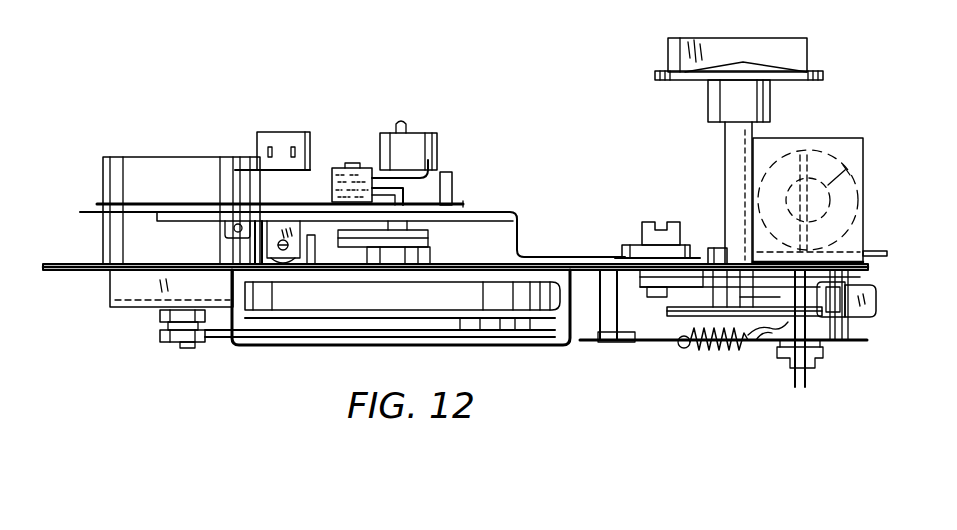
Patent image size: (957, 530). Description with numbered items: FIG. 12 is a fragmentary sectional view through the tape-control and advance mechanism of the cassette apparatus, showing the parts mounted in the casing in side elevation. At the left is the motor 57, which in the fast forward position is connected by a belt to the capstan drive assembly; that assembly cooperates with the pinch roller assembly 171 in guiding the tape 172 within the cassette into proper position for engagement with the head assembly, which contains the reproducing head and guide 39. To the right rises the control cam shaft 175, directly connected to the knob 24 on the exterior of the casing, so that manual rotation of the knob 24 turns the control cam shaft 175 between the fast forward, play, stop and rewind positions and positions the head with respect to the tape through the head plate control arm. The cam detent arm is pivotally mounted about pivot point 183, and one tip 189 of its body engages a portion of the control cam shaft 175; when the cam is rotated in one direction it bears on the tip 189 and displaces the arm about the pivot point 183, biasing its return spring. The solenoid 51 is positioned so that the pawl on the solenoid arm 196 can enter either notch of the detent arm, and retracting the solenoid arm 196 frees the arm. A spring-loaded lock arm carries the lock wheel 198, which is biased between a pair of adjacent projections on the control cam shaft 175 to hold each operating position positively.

The knob 24 is at (761, 55).
The guide 39 is at (279, 132).
The solenoid 51 is at (858, 154).
The motor 57 is at (125, 157).
The pinch roller assembly 171 is at (375, 166).
The tape 172 is at (222, 330).
The control cam shaft 175 is at (695, 312).
The pivot point 183 is at (645, 224).
The tip 189 is at (696, 250).
The solenoid arm 196 is at (858, 182).
The lock wheel 198 is at (850, 291).